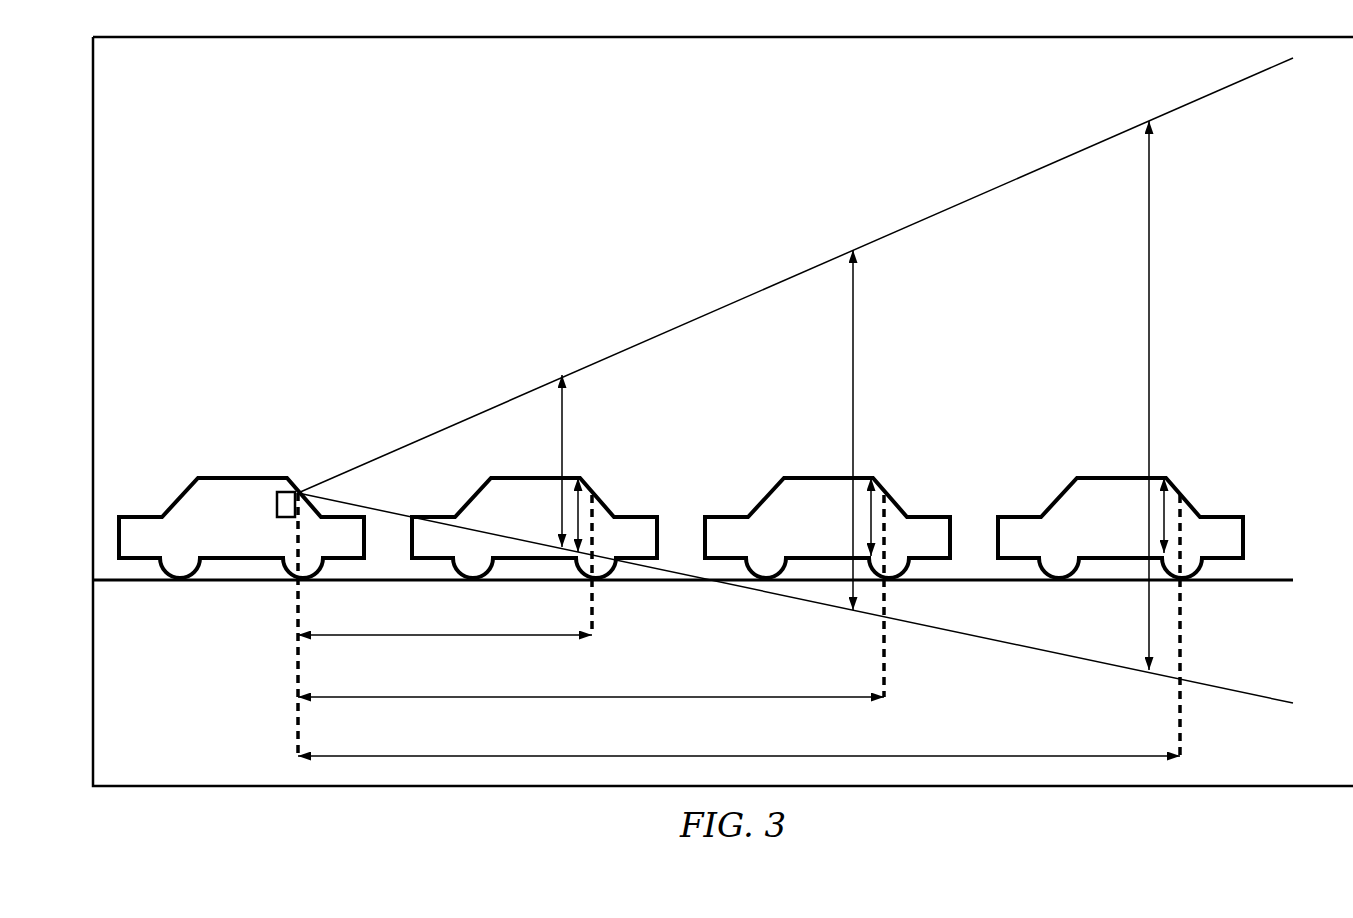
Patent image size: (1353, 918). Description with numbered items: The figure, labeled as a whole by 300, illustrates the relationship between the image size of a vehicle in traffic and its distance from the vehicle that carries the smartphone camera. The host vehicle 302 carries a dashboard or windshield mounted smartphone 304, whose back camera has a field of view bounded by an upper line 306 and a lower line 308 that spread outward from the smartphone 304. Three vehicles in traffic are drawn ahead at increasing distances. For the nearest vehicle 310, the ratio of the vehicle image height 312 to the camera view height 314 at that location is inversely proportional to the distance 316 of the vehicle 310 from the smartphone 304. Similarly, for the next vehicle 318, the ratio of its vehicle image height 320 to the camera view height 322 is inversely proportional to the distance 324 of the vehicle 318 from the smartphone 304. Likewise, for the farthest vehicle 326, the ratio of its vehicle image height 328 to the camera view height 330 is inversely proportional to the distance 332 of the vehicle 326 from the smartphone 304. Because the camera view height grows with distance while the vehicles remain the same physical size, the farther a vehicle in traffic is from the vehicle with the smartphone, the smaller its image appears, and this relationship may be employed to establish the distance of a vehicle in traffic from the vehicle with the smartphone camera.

The sensor field of view scenario 300 is at (420, 235).
The vehicle 302 is at (207, 477).
The smartphone 304 is at (292, 490).
The line 306 is at (370, 461).
The line 308 is at (385, 511).
The vehicle 310 is at (502, 477).
The vehicle image height 312 is at (580, 507).
The camera view height 314 is at (563, 455).
The distance 316 is at (398, 633).
The vehicle 318 is at (798, 477).
The vehicle image height 320 is at (873, 503).
The camera view height 322 is at (855, 373).
The distance 324 is at (563, 696).
The vehicle 326 is at (1089, 477).
The vehicle image height 328 is at (1169, 506).
The camera view height 330 is at (1150, 298).
The distance 332 is at (720, 755).